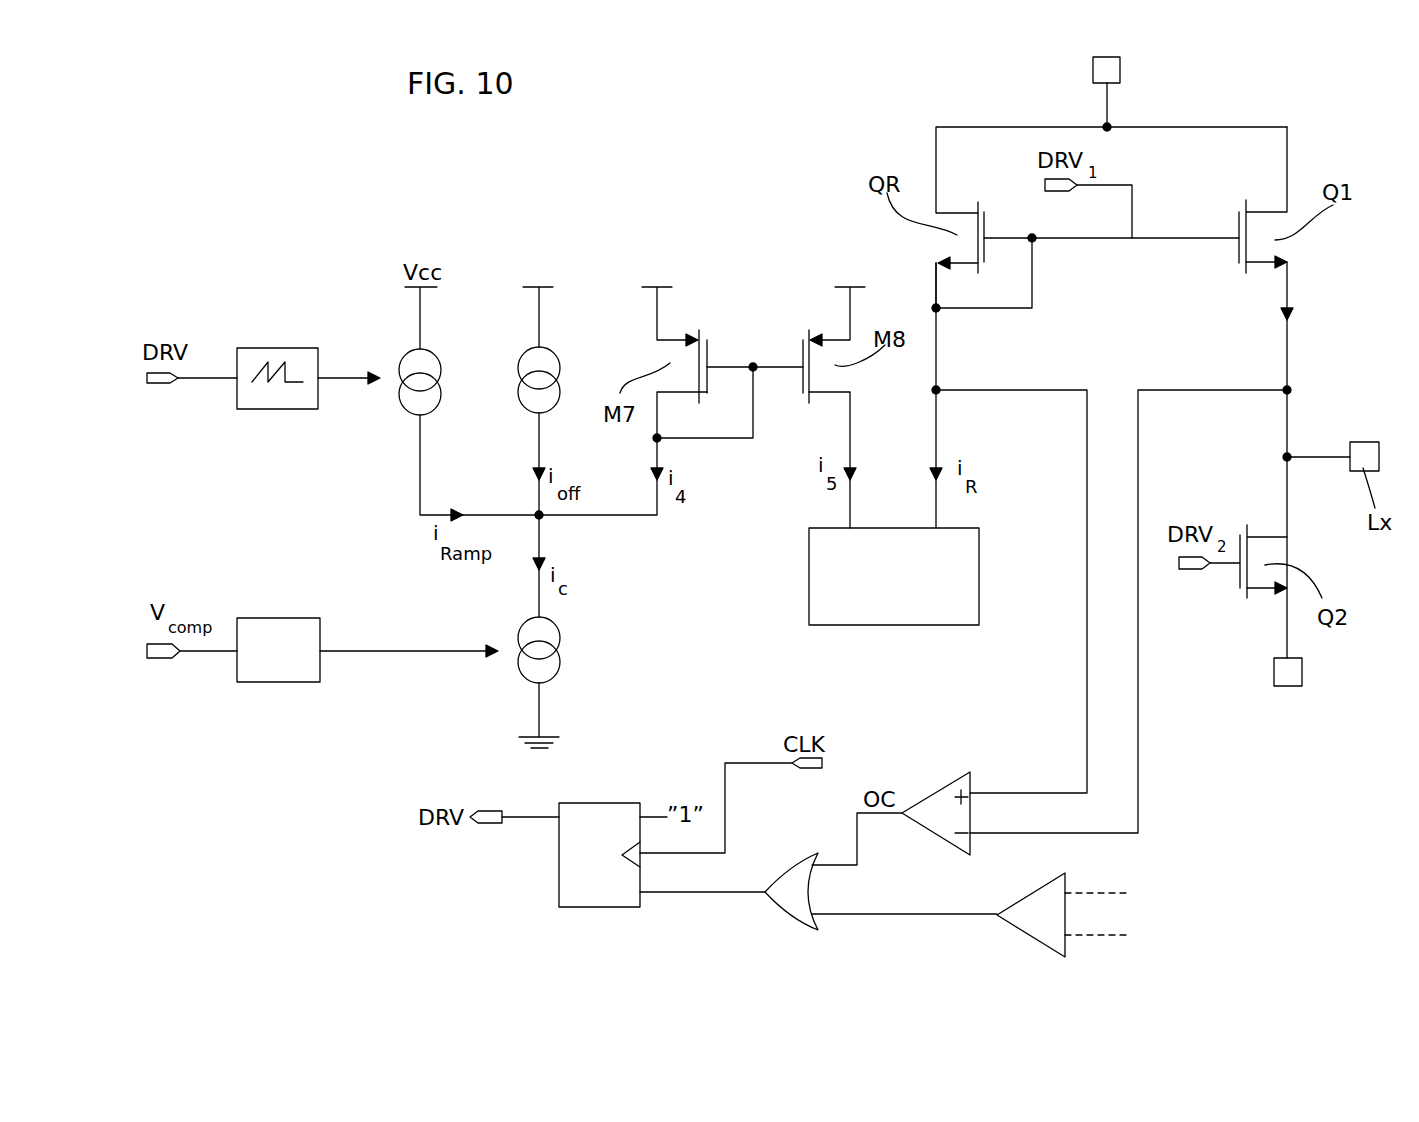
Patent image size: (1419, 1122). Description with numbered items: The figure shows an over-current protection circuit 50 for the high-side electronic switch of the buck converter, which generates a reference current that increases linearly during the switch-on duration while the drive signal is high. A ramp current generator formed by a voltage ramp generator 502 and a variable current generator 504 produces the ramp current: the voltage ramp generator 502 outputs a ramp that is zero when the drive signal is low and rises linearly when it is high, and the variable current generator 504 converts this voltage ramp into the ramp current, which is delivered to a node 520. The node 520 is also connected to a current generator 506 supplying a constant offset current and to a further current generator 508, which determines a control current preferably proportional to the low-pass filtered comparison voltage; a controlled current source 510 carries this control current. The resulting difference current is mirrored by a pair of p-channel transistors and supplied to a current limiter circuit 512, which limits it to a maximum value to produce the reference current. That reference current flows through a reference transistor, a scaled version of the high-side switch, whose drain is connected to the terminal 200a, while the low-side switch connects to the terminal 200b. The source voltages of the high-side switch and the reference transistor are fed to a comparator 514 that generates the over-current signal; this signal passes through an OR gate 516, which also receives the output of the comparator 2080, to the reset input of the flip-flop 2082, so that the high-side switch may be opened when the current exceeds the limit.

The circuit 50 is at (318, 218).
The voltage ramp generator 502 is at (276, 348).
The variable current generator 504 is at (430, 363).
The current generator 506 is at (548, 365).
The further current generator 508 is at (275, 670).
The controlled current source 510 is at (552, 640).
The current limiter circuit 512 is at (897, 615).
The comparator 514 is at (965, 782).
The OR gate 516 is at (787, 902).
The node 520 is at (541, 517).
The comparator 2080 is at (1030, 927).
The flip-flop 2082 is at (565, 872).
The terminal 200a is at (1120, 70).
The output terminal 200b is at (1292, 685).